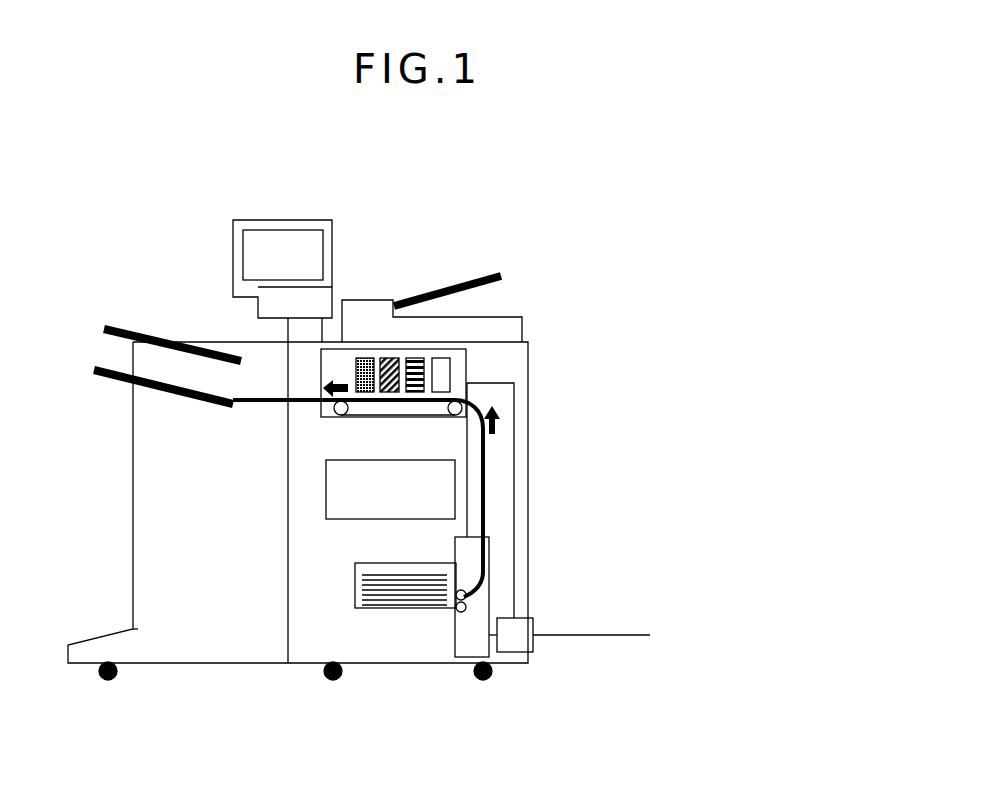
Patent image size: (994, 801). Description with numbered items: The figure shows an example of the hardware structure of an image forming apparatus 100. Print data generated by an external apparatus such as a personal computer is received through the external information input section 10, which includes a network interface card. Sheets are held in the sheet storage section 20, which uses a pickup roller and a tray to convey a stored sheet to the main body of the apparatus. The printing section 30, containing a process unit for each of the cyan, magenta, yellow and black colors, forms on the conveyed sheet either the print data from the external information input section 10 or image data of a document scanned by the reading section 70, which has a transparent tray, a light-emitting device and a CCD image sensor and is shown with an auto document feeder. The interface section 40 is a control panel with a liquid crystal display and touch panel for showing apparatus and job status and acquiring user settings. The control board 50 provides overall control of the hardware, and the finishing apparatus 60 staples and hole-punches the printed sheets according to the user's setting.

The image forming apparatus 100 is at (616, 242).
The external information input section 10 is at (525, 643).
The sheet storage section 20 is at (403, 593).
The printing section 30 is at (460, 370).
The interface section 40 is at (255, 243).
The control board 50 is at (348, 519).
The finishing apparatus 60 is at (152, 440).
The reading section 70 is at (483, 327).